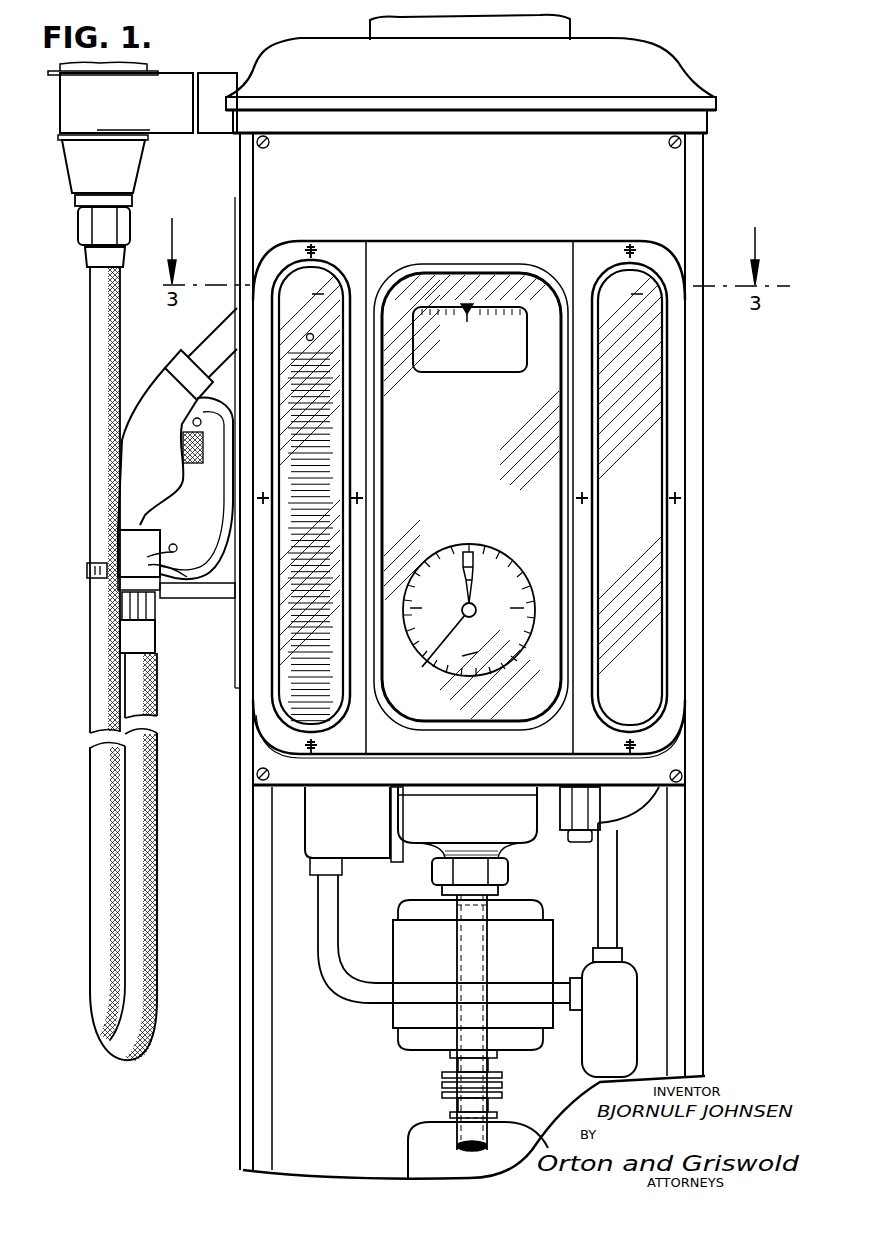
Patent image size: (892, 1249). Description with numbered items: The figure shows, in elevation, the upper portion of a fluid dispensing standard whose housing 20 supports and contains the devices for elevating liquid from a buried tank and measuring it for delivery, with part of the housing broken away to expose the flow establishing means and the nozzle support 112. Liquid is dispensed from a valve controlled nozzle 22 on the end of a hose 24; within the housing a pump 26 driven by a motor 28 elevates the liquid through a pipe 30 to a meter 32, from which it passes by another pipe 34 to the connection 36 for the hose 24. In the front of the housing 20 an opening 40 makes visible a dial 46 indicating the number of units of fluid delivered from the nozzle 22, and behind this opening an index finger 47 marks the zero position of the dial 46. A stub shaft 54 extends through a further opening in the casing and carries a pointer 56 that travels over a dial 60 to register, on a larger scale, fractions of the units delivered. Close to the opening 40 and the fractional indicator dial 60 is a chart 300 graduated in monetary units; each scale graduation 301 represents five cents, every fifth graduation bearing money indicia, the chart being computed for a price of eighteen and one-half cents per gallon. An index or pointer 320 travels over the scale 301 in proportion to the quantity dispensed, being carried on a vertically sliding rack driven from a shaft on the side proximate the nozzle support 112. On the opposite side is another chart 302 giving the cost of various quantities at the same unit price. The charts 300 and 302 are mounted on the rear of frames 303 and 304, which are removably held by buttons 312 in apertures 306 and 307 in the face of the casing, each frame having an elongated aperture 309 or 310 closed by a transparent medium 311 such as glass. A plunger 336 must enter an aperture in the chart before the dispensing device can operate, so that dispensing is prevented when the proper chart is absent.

The dispensing standard or housing 20 is at (668, 182).
The valve controlled nozzle 22 is at (158, 412).
The hose 24 is at (137, 694).
The pump 26 is at (422, 1140).
The motor 28 is at (402, 935).
The pipe 30 is at (473, 1010).
The meter 32 is at (518, 830).
The pipe 34 is at (628, 803).
The connection 36 is at (123, 174).
The opening 40 is at (480, 367).
The dial 46 is at (490, 333).
The index finger 47 is at (464, 306).
The stub shaft 54 is at (438, 656).
The pointer 56 is at (477, 570).
The dial 60 is at (447, 565).
The nozzle support 112 is at (194, 598).
The chart 300 is at (305, 274).
The scale graduation 301 is at (332, 363).
The chart 302 is at (648, 345).
The frame 303 is at (266, 707).
The frame 304 is at (677, 660).
The aperture 306 is at (363, 268).
The aperture 307 is at (567, 258).
The aperture 309 is at (340, 443).
The aperture 310 is at (657, 440).
The transparent medium 311 is at (337, 270).
The buttons 312 is at (312, 246).
The index or pointer 320 is at (283, 351).
The plunger 336 is at (316, 338).